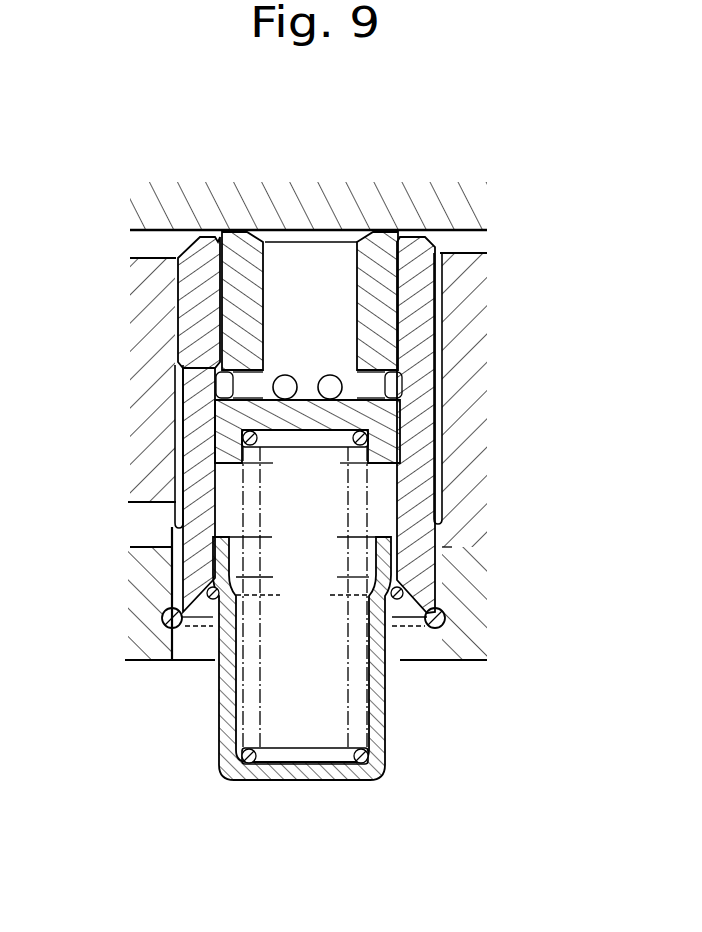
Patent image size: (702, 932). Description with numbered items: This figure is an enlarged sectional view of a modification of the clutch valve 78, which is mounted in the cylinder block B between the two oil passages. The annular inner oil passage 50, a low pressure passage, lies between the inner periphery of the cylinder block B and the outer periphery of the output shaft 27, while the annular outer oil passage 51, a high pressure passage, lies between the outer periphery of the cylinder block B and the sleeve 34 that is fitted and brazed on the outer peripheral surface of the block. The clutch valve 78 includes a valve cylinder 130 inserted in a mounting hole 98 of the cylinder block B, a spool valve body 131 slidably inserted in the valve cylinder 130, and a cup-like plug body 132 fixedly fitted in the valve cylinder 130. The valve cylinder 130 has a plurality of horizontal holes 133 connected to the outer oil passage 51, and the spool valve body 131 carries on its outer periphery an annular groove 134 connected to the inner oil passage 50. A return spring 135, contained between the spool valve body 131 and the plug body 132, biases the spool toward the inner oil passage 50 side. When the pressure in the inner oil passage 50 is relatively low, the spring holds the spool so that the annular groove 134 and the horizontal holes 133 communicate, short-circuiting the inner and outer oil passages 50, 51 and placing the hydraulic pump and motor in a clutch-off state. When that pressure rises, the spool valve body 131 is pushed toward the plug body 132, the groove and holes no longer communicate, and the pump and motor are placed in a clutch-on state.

The output shaft 27 is at (275, 180).
The clutch valve 78 is at (399, 186).
The inner oil passage 50 is at (138, 245).
The mounting hole 98 is at (178, 315).
The horizontal holes 133 is at (185, 375).
The cylinder block B is at (142, 456).
The outer oil passage 51 is at (142, 530).
The sleeve 34 is at (130, 618).
The valve cylinder 130 is at (432, 303).
The spool valve body 131 is at (385, 340).
The annular groove 134 is at (333, 373).
The return spring 135 is at (372, 445).
The plug body 132 is at (385, 735).